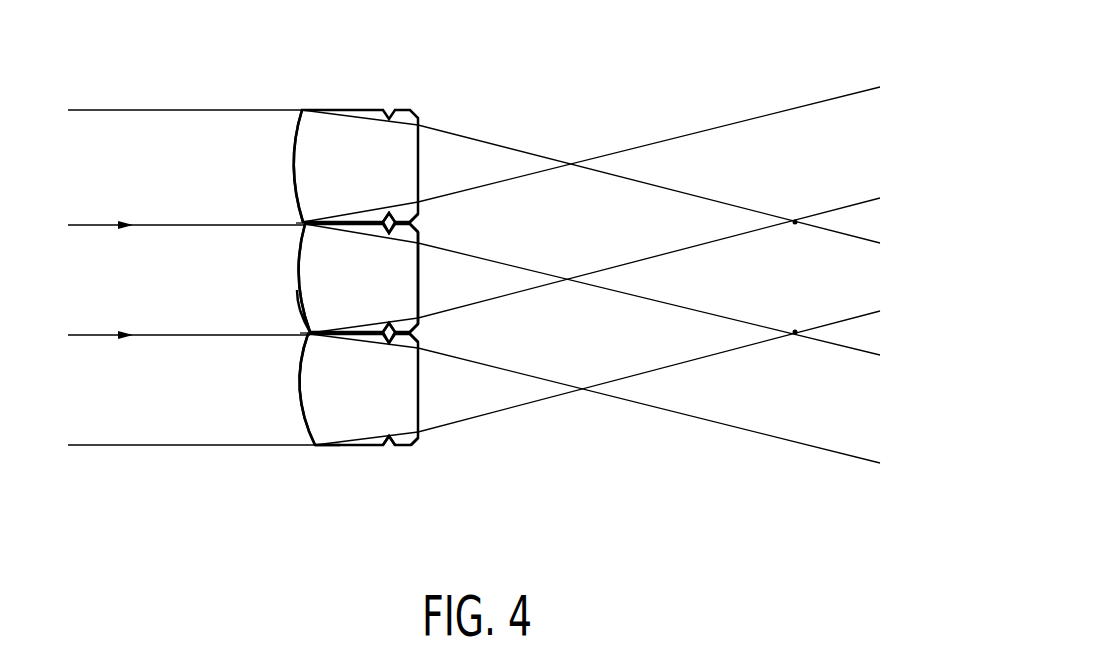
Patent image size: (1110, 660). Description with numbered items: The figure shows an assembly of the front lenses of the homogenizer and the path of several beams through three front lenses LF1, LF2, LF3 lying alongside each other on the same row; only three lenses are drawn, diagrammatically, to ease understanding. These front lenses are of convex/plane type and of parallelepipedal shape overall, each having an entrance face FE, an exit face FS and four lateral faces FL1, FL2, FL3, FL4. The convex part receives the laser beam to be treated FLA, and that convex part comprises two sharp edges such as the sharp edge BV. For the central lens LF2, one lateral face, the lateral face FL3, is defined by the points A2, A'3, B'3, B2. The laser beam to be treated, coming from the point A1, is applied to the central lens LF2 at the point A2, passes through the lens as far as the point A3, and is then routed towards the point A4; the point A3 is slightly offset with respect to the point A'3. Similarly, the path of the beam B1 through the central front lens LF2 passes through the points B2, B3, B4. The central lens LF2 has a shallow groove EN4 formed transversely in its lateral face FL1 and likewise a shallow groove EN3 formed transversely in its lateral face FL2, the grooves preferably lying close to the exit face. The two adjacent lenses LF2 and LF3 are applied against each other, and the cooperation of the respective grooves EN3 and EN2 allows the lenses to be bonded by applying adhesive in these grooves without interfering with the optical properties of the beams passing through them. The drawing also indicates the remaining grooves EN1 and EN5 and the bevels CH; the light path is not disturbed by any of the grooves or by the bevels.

The front lens LF1 is at (332, 110).
The lateral face FL1 is at (315, 208).
The lateral face FL3 is at (338, 275).
The central front lens LF2 is at (297, 272).
The entrance face FE is at (296, 306).
The lateral face FL4 is at (288, 324).
The lateral face FL2 is at (318, 347).
The front lens LF3 is at (297, 398).
The sharp edge BV is at (311, 460).
The groove EN5 is at (398, 218).
The shallow groove EN4 is at (417, 212).
The shallow groove EN3 is at (380, 333).
The groove EN2 is at (420, 355).
The groove EN1 is at (389, 450).
The bevel CH is at (418, 441).
The exit face FS is at (420, 280).
The point A1 is at (183, 210).
The beam B1 is at (187, 353).
The laser beam to be treated FLA is at (140, 448).
The point A2 is at (282, 207).
The point B2 is at (287, 353).
The point A3 is at (649, 299).
The point B3 is at (649, 259).
The point A'3 is at (649, 161).
The point B'3 is at (649, 394).
The point B4 is at (807, 200).
The point A4 is at (807, 357).